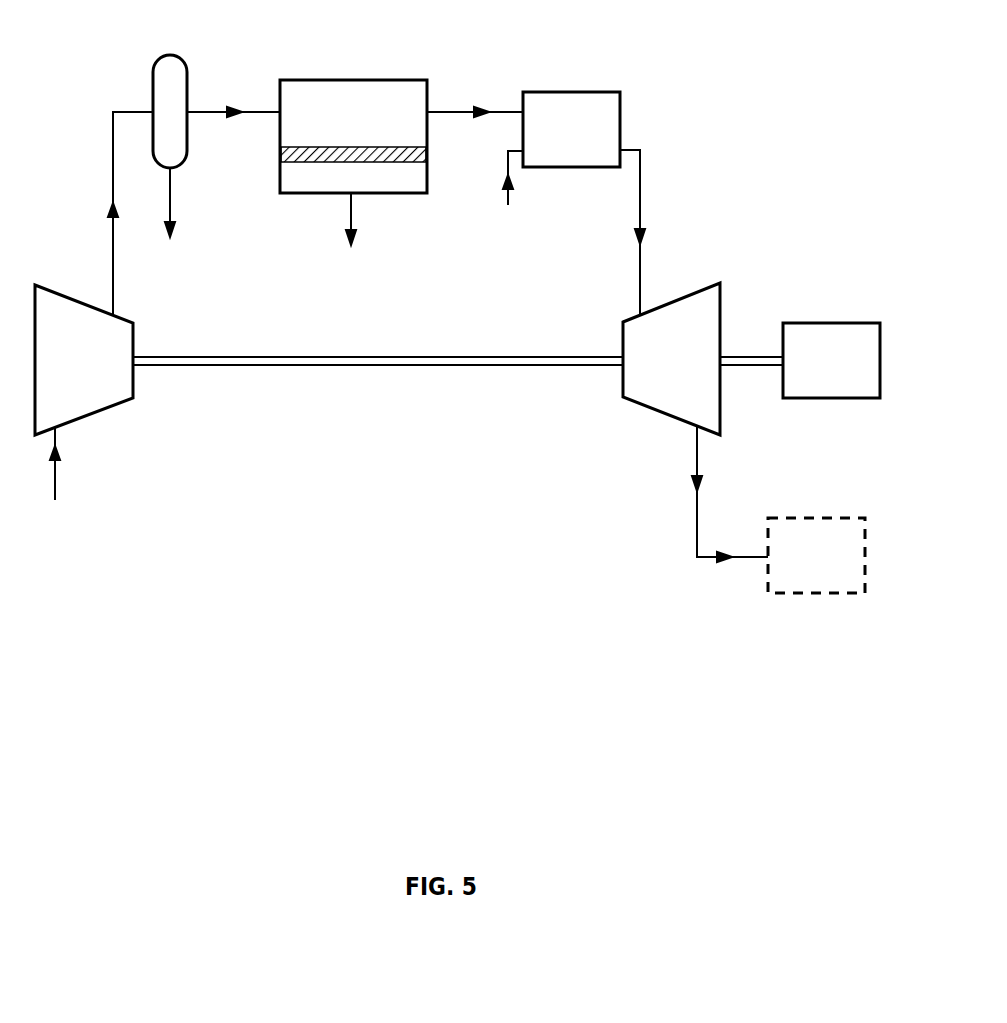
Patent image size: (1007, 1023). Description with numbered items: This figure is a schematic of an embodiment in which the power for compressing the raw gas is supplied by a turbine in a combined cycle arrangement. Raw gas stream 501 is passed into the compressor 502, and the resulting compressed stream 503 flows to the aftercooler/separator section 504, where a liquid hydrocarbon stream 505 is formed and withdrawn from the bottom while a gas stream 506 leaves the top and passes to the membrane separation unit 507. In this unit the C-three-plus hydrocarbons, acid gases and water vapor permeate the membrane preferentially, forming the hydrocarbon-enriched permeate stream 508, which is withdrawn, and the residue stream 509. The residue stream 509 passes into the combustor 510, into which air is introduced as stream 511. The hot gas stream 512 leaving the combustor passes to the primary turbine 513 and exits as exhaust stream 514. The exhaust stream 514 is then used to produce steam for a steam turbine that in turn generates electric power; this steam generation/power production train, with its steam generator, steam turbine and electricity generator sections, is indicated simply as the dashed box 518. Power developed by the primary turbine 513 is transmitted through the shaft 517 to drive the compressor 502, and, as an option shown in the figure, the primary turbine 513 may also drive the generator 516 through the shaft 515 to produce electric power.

The raw gas stream 501 is at (52, 478).
The compressor 502 is at (123, 402).
The compressed stream 503 is at (108, 213).
The aftercooler/separator section 504 is at (170, 54).
The liquid hydrocarbon stream 505 is at (170, 219).
The gas stream 506 is at (233, 98).
The membrane separation unit 507 is at (383, 80).
The permeate stream 508 is at (352, 235).
The residue stream 509 is at (475, 98).
The combustor 510 is at (602, 91).
The air stream 511 is at (505, 195).
The hot gas stream 512 is at (655, 232).
The primary turbine 513 is at (657, 412).
The exhaust stream 514 is at (730, 509).
The shaft 515 is at (752, 366).
The generator 516 is at (818, 323).
The shaft 517 is at (512, 366).
The steam generation/power production train 518 is at (790, 593).